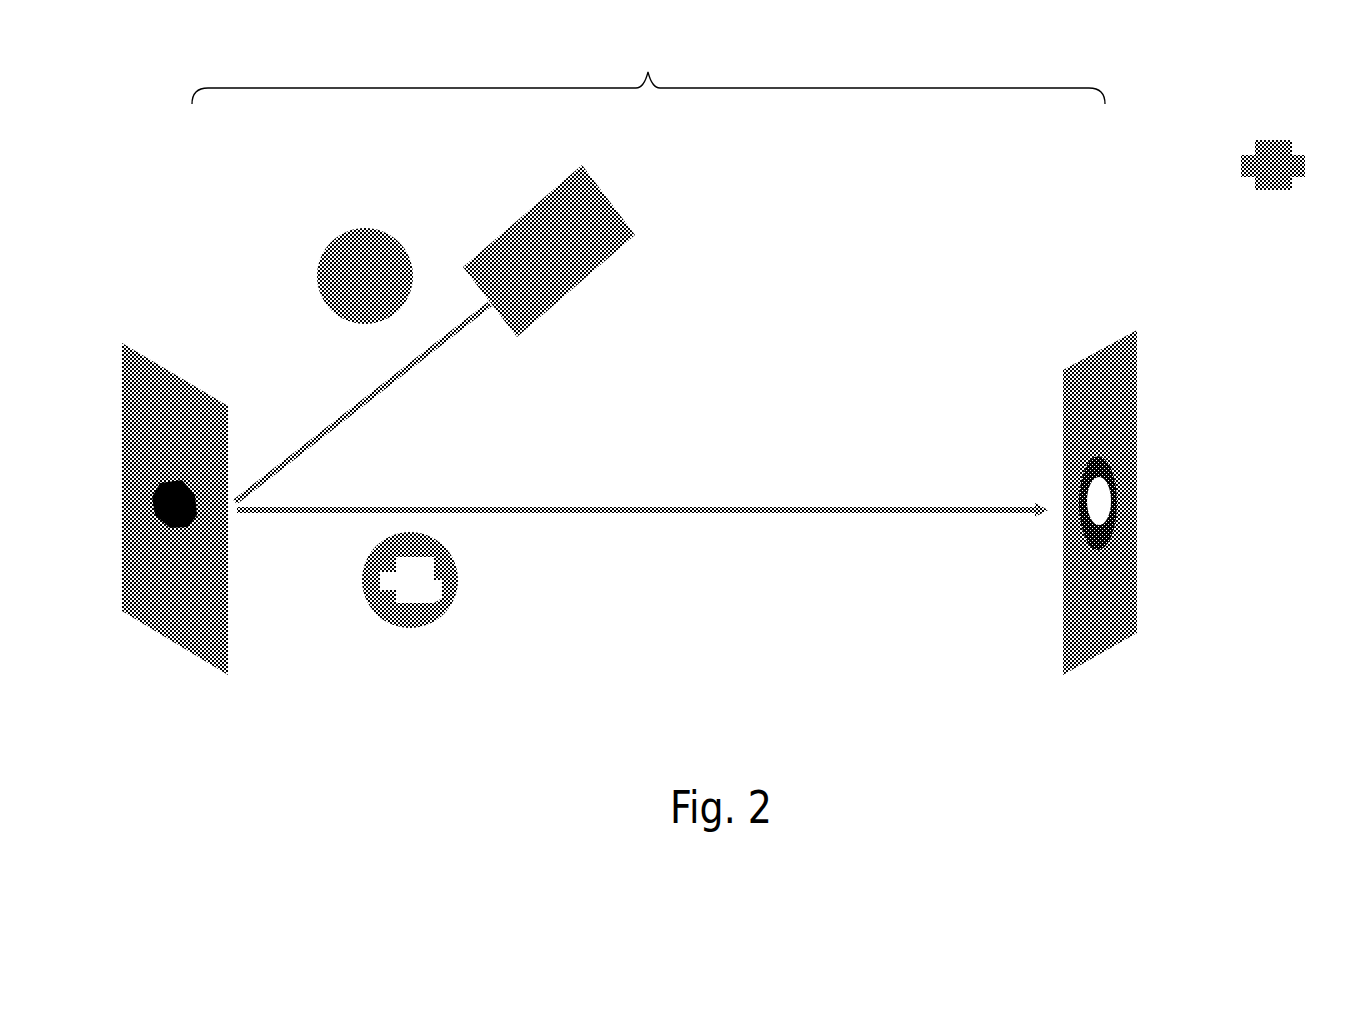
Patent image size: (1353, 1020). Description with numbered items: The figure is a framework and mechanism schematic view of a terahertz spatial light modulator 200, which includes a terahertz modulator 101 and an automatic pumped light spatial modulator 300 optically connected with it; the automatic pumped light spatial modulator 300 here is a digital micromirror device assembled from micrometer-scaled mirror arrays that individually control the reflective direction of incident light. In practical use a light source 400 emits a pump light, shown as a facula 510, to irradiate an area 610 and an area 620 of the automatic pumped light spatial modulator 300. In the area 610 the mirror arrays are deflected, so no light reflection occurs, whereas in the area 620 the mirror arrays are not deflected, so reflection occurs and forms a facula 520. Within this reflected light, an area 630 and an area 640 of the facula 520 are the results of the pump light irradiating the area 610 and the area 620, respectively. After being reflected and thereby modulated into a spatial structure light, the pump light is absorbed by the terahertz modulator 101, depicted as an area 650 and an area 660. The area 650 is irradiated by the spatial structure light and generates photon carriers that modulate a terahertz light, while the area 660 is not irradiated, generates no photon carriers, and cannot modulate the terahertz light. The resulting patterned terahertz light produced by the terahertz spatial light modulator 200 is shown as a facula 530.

The terahertz spatial light modulator 200 is at (648, 70).
The automatic pumped light spatial modulator 300 is at (162, 370).
The terahertz modulator 101 is at (1094, 352).
The light source 400 is at (555, 285).
The facula 510 is at (332, 273).
The facula 520 is at (425, 627).
The facula 530 is at (1272, 152).
The area 610 is at (182, 478).
The area 620 is at (212, 610).
The area 630 is at (434, 546).
The area 640 is at (466, 595).
The area 650 is at (1128, 536).
The area 660 is at (1126, 482).